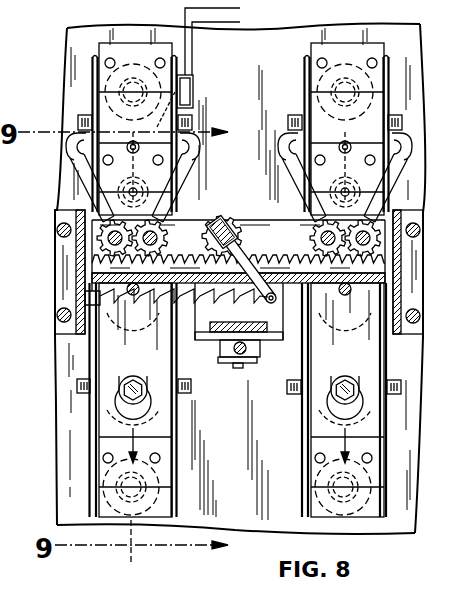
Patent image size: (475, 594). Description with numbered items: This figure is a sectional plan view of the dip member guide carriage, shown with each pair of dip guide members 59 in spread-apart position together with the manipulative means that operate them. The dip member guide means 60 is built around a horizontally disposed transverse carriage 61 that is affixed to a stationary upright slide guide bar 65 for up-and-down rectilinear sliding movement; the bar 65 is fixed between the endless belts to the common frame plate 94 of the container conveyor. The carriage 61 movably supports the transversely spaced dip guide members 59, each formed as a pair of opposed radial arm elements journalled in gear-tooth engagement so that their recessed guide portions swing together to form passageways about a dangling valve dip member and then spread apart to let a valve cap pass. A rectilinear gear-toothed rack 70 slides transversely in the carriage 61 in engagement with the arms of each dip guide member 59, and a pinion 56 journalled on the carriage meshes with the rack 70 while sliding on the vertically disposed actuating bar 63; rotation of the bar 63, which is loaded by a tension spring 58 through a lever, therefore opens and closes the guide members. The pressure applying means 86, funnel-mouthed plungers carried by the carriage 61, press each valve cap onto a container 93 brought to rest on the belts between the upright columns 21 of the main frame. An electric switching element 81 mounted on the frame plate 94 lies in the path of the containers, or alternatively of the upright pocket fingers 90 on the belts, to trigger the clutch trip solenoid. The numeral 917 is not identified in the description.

The carriage frame 917 is at (138, 47).
The upright pocket fingers 90 is at (158, 64).
The electric switching element 81 is at (193, 86).
The dip guide member 59 is at (68, 150).
The pinion 56 is at (209, 216).
The actuating bar 63 is at (245, 224).
The transverse carriage 61 is at (266, 245).
The gear toothed rack 70 is at (194, 246).
The dip member guide means 60 is at (95, 266).
The tension spring 58 is at (277, 298).
The slide guide bar 65 is at (210, 327).
The upright columns 21 is at (76, 247).
The pressure applying means 86 is at (122, 412).
The container 93 is at (146, 510).
The frame plate 94 is at (237, 419).